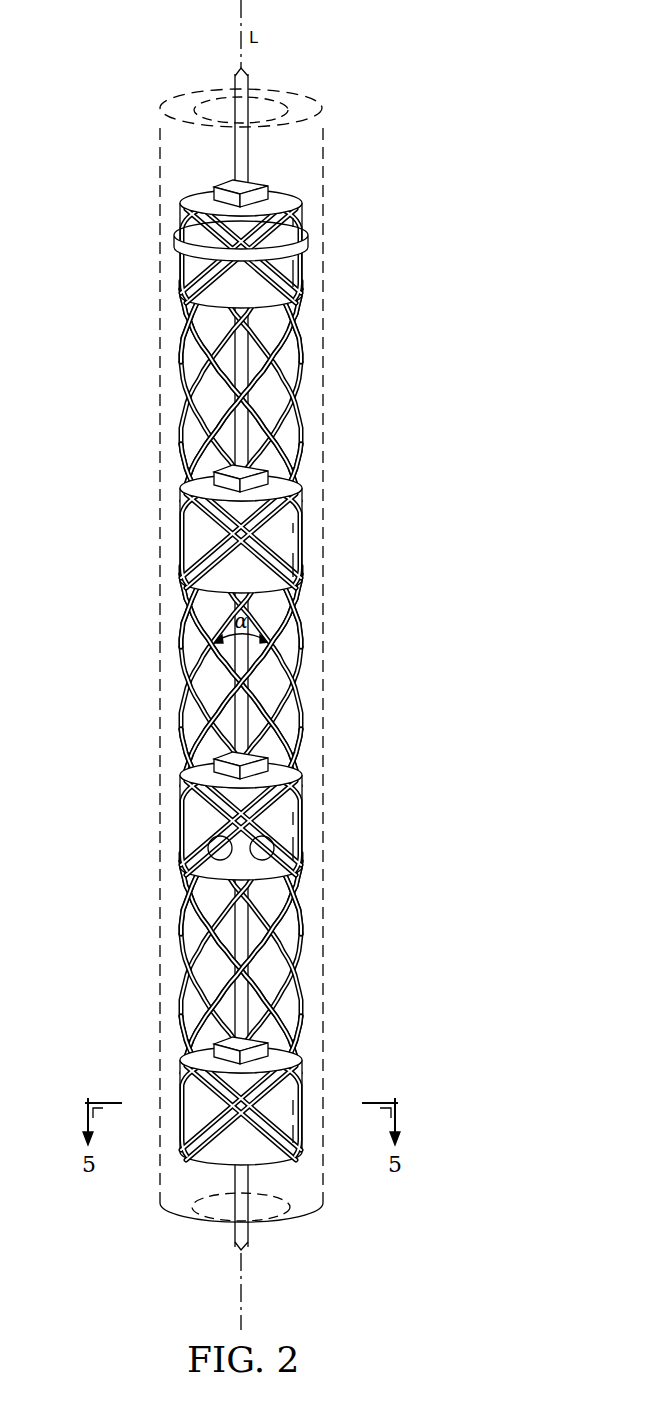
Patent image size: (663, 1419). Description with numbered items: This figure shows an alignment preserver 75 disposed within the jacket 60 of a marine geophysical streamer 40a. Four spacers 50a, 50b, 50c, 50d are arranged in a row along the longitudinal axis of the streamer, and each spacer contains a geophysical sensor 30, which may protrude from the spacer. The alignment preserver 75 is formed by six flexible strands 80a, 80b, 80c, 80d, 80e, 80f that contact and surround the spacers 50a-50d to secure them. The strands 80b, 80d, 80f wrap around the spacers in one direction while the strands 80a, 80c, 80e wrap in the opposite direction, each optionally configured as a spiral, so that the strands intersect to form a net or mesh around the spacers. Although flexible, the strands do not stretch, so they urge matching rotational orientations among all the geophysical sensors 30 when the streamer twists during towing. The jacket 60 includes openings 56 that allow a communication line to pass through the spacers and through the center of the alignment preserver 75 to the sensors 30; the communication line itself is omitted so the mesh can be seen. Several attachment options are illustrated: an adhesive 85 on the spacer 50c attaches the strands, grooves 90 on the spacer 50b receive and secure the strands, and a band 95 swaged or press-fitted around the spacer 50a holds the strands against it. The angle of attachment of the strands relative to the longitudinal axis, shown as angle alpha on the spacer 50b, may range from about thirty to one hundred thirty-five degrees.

The streamer 40a is at (415, 128).
The geophysical sensors 30 is at (214, 190).
The spacer 50a is at (203, 265).
The spacer 50b is at (198, 565).
The spacer 50c is at (200, 803).
The spacer 50d is at (192, 1087).
The openings 56 is at (217, 118).
The jacket 60 is at (160, 130).
The alignment preserver 75 is at (244, 677).
The strand 80a is at (299, 355).
The strand 80b is at (180, 350).
The strand 80c is at (294, 437).
The strand 80d is at (185, 462).
The strand 80e is at (180, 407).
The strand 80f is at (299, 396).
The adhesive 85 is at (216, 842).
The grooves 90 is at (215, 532).
The band 95 is at (305, 236).